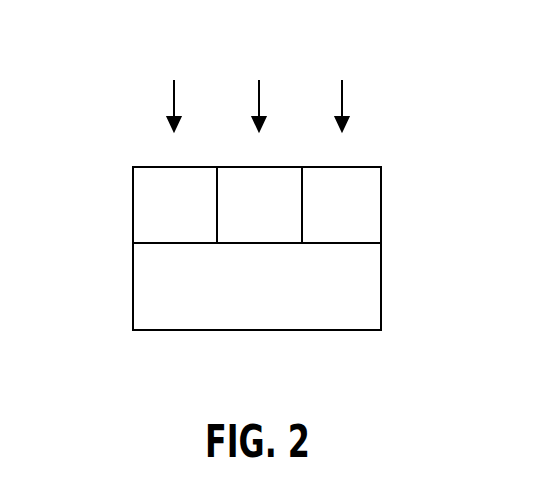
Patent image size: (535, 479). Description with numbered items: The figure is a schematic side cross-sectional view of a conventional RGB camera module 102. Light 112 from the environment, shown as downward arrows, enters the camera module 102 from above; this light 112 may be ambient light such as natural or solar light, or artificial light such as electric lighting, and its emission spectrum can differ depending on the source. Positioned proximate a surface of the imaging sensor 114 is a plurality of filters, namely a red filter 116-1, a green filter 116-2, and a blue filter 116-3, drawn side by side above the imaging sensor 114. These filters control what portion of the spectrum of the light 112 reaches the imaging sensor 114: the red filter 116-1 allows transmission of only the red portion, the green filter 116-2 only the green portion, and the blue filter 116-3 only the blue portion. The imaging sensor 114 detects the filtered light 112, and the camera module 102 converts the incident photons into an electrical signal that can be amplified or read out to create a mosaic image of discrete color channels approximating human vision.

The camera module 102 is at (252, 199).
The light 112 is at (258, 102).
The imaging sensor 114 is at (340, 315).
The red filter 116-1 is at (147, 202).
The green filter 116-2 is at (240, 180).
The blue filter 116-3 is at (372, 206).